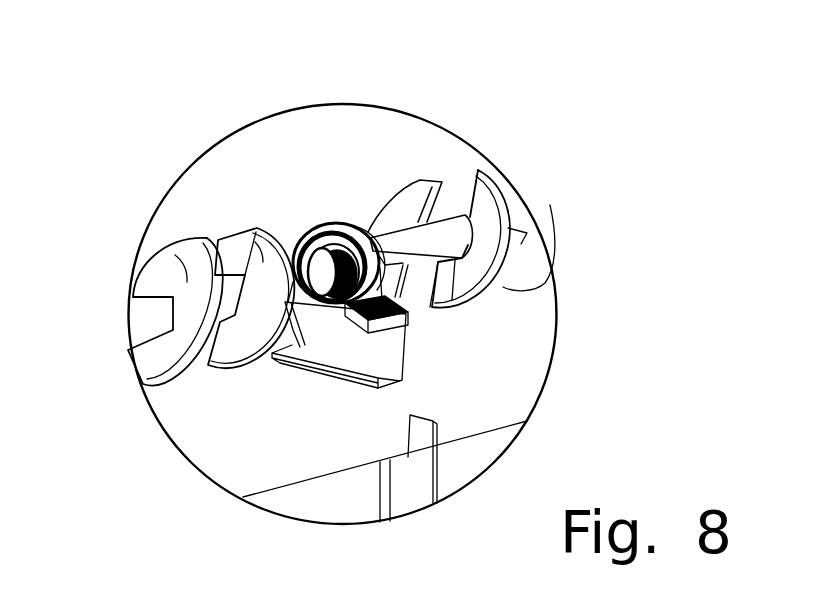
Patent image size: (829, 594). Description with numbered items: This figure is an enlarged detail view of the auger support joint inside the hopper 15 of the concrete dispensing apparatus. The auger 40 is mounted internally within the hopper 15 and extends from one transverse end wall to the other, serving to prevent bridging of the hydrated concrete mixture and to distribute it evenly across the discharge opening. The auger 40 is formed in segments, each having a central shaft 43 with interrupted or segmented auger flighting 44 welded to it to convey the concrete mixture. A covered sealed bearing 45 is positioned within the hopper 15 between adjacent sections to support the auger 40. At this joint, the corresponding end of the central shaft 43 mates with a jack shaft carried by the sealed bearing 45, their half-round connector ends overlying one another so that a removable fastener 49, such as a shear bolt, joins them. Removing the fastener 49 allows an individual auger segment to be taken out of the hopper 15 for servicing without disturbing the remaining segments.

The auger 40 is at (345, 140).
The hopper 15 is at (490, 409).
The auger flighting 44 is at (425, 200).
The removable fastener 49 is at (360, 283).
The covered sealed bearing 45 is at (293, 237).
The central shaft 43 is at (430, 293).